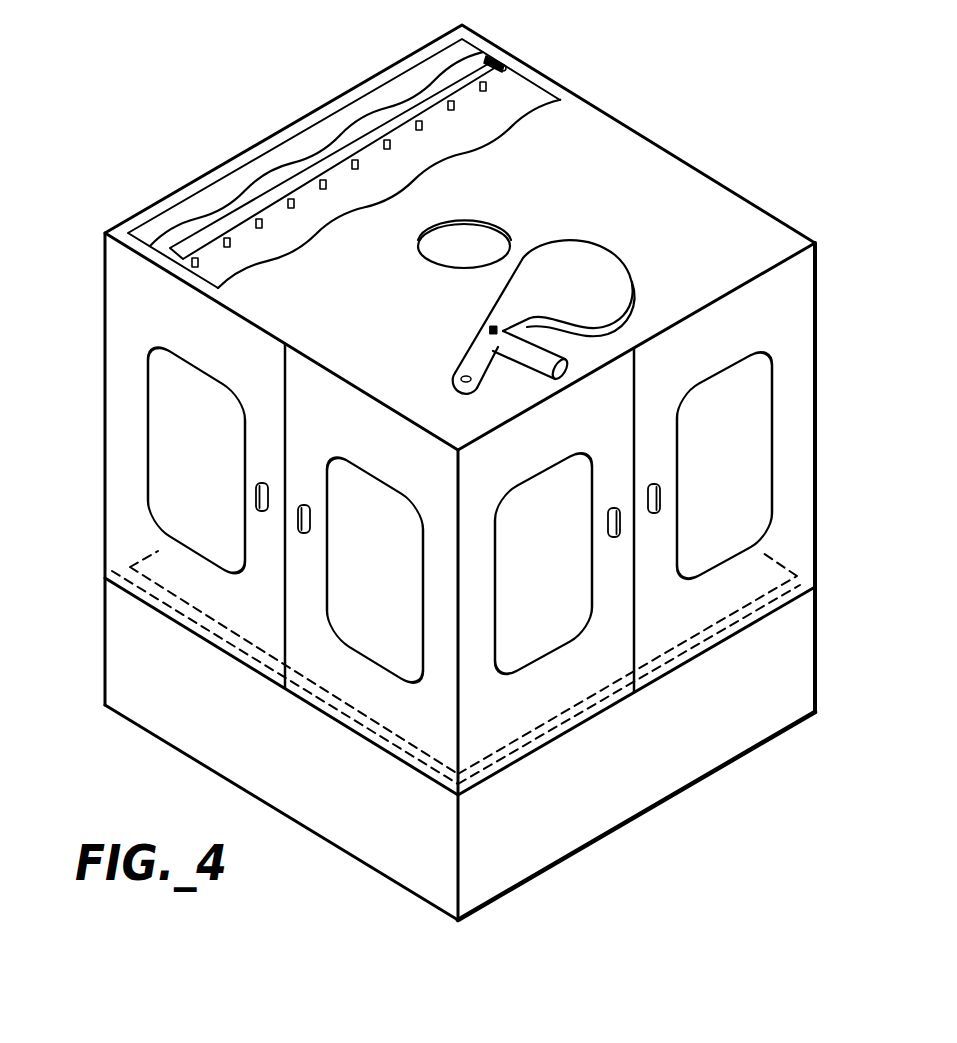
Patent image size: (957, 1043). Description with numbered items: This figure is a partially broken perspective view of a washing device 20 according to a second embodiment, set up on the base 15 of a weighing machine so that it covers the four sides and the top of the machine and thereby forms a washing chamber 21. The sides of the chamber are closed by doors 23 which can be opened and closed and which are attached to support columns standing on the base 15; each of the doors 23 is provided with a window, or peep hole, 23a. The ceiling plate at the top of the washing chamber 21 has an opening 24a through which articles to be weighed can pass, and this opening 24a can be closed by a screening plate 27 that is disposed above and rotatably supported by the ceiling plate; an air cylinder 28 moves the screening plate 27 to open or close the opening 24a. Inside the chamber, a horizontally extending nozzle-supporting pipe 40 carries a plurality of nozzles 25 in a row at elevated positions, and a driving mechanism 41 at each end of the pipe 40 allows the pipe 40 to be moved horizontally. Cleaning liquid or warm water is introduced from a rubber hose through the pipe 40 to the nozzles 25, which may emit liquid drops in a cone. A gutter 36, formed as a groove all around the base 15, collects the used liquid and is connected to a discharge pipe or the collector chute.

The base 15 is at (610, 810).
The washing device 20 is at (650, 148).
The washing chamber 21 is at (437, 83).
The doors 23 is at (798, 320).
The windows 23a is at (753, 435).
The opening 24a is at (473, 257).
The nozzles 25 is at (257, 222).
The screening plate 27 is at (607, 272).
The air cylinder 28 is at (530, 357).
The gutter 36 is at (123, 572).
The nozzle-supporting pipe 40 is at (212, 232).
The driving mechanism 41 is at (500, 73).